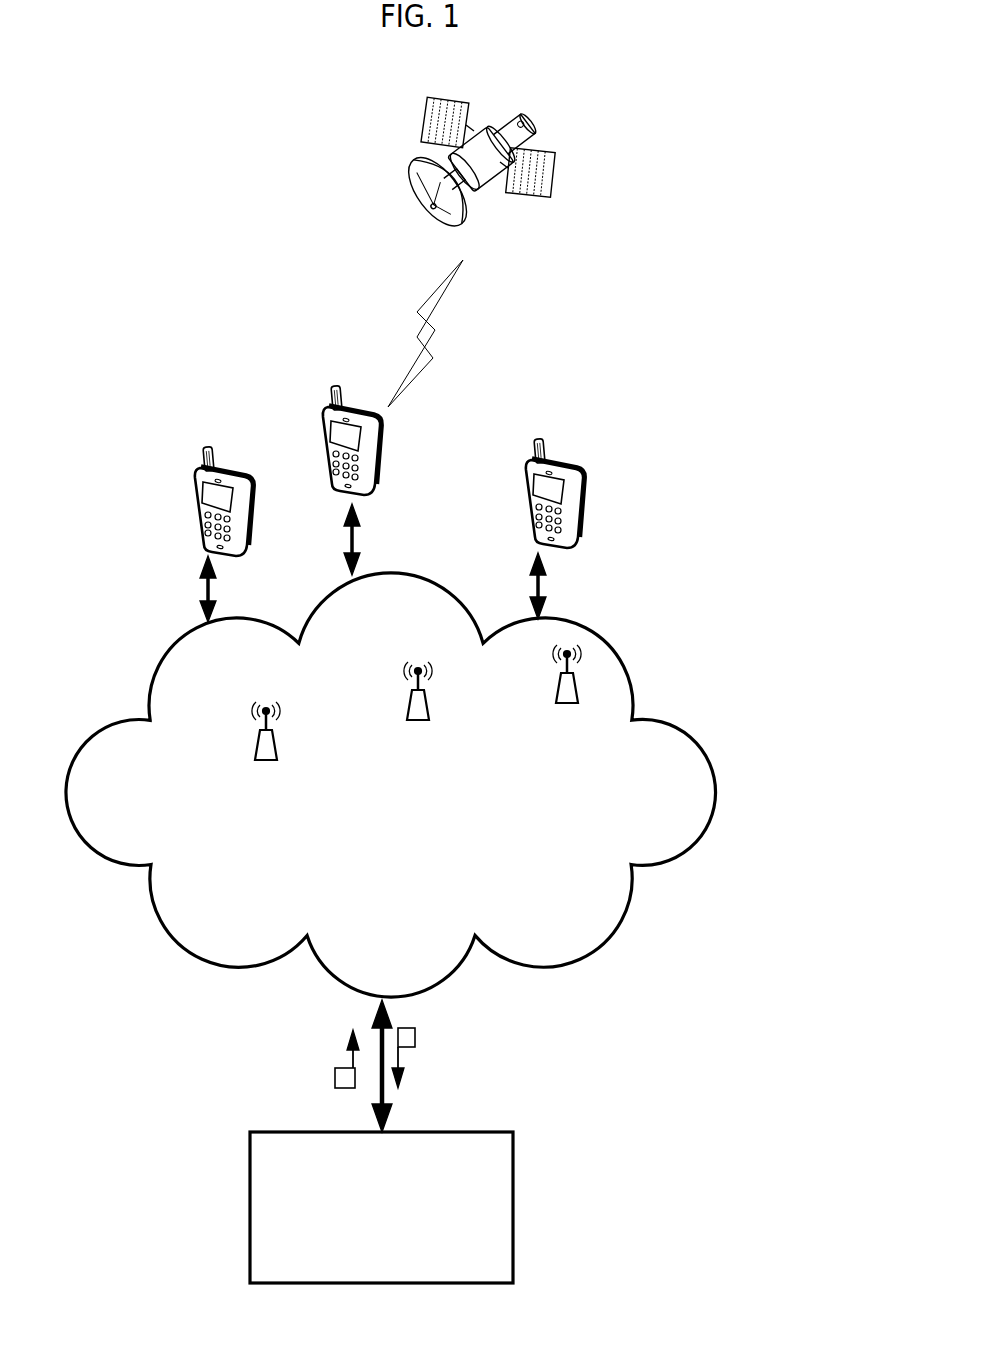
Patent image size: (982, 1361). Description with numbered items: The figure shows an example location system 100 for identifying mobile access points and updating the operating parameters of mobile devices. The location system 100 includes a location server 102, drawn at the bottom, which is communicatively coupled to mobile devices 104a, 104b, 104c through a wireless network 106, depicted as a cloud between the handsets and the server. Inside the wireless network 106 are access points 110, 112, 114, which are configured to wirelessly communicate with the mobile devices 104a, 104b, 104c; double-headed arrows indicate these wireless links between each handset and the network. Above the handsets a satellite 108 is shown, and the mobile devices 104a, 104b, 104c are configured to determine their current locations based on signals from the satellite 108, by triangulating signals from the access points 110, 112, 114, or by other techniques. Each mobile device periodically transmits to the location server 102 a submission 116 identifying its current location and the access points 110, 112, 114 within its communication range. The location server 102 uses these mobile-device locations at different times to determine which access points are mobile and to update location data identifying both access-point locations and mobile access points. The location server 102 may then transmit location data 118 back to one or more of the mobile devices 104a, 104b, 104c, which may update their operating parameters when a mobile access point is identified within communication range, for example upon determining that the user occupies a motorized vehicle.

The location system 100 is at (780, 88).
The location server 102 is at (473, 1222).
The mobile device 104a is at (209, 446).
The mobile device 104b is at (337, 387).
The mobile device 104c is at (540, 438).
The wireless network 106 is at (485, 828).
The satellite 108 is at (410, 174).
The access point 110 is at (260, 728).
The access point 112 is at (414, 692).
The access point 114 is at (566, 703).
The submission 116 is at (415, 1032).
The location data 118 is at (335, 1078).